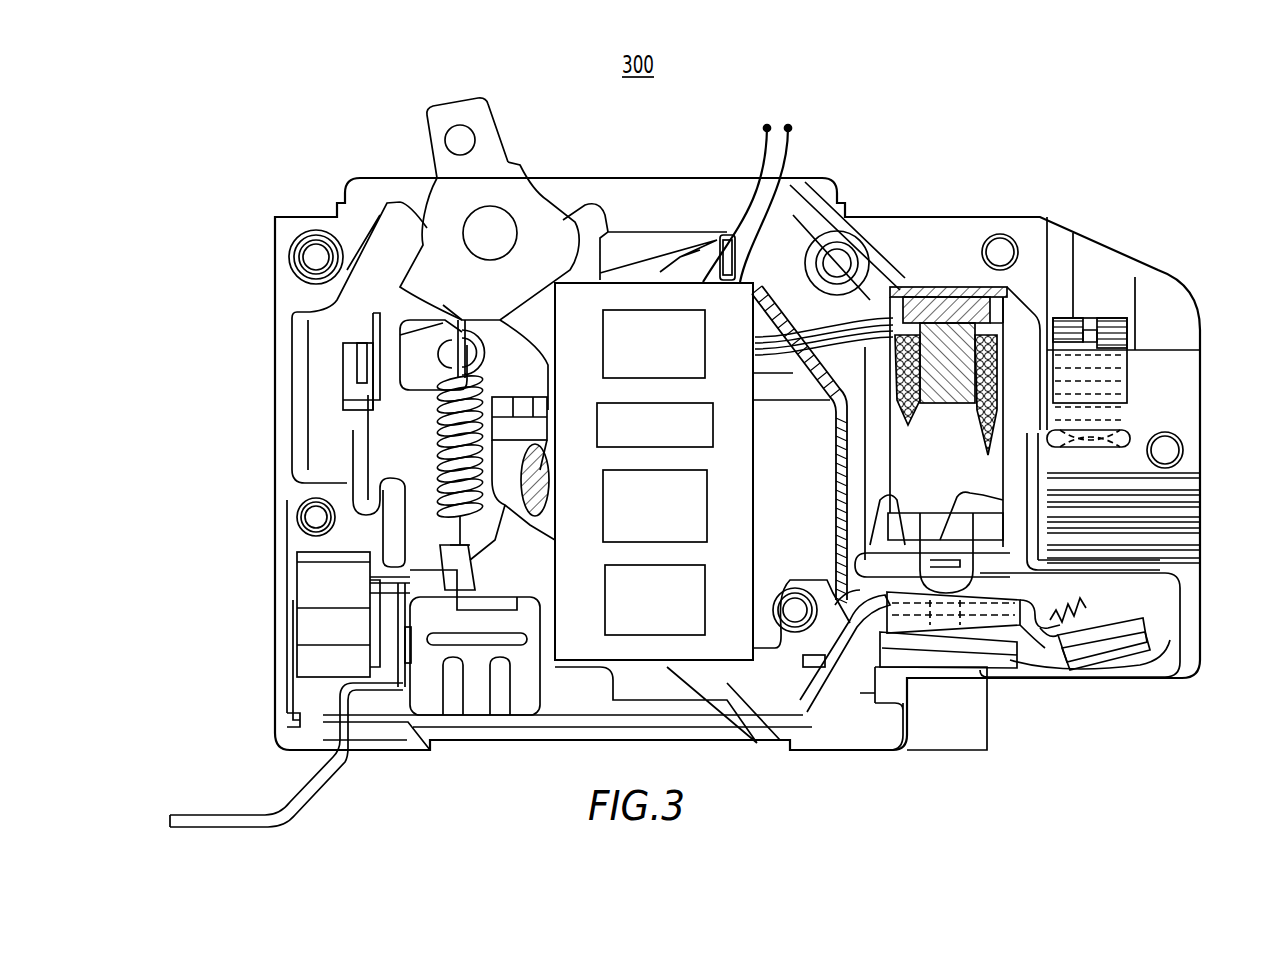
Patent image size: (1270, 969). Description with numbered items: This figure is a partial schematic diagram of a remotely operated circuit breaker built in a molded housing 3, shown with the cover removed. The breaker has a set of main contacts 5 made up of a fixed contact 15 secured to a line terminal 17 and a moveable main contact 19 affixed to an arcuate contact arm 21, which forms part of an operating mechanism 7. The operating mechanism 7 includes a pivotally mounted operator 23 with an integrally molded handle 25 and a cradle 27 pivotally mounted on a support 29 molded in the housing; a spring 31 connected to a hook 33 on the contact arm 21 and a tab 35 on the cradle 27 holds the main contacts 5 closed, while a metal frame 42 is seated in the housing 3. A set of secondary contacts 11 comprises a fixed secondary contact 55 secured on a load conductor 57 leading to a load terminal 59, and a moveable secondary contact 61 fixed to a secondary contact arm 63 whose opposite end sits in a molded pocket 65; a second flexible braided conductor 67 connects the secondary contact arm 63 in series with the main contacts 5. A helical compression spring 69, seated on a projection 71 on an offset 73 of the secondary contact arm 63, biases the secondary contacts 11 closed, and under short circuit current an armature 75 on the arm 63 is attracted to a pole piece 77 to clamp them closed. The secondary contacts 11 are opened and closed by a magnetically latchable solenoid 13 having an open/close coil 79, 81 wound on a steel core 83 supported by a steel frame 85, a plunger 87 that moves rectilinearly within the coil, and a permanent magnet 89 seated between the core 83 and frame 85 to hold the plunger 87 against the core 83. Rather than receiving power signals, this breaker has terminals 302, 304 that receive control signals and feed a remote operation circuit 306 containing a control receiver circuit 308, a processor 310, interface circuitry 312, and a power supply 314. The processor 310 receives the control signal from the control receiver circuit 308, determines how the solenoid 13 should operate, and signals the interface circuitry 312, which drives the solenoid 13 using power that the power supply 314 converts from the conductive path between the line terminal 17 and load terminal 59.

The molded housing 3 is at (607, 178).
The set of main contacts 5 is at (387, 720).
The operating mechanism 7 is at (413, 445).
The set of secondary contacts 11 is at (1098, 688).
The magnetically latchable solenoid 13 is at (880, 407).
The fixed contact 15 is at (405, 642).
The line terminal 17 is at (300, 790).
The moveable main contact 19 is at (410, 640).
The contact arm 21 is at (503, 527).
The operator 23 is at (507, 178).
The handle 25 is at (455, 113).
The cradle 27 is at (385, 277).
The support 29 is at (397, 497).
The spring 31 is at (425, 430).
The hook 33 is at (417, 552).
The tab 35 is at (460, 362).
The metal frame 42 is at (683, 263).
The fixed secondary contact 55 is at (1137, 647).
The load conductor 57 is at (1180, 605).
The load terminal 59 is at (1130, 367).
The moveable secondary contact 61 is at (1180, 645).
The secondary contact arm 63 is at (858, 628).
The molded pocket 65 is at (828, 666).
The second flexible braided conductor 67 is at (770, 628).
The helical compression spring 69 is at (1075, 598).
The projection 71 is at (1045, 633).
The offset 73 is at (1025, 637).
The armature 75 is at (907, 633).
The pole piece 77 is at (963, 648).
The open/close coil 79 is at (893, 318).
The open/close coil 81 is at (972, 450).
The steel core 83 is at (940, 372).
The steel frame 85 is at (1000, 290).
The plunger 87 is at (940, 423).
The permanent magnet 89 is at (980, 313).
The terminal 302 is at (767, 128).
The terminal 304 is at (788, 128).
The remote operation circuit 306 is at (595, 665).
The control receiver circuit 308 is at (603, 345).
The processor 310 is at (597, 420).
The interface circuitry 312 is at (603, 487).
The power supply 314 is at (605, 580).